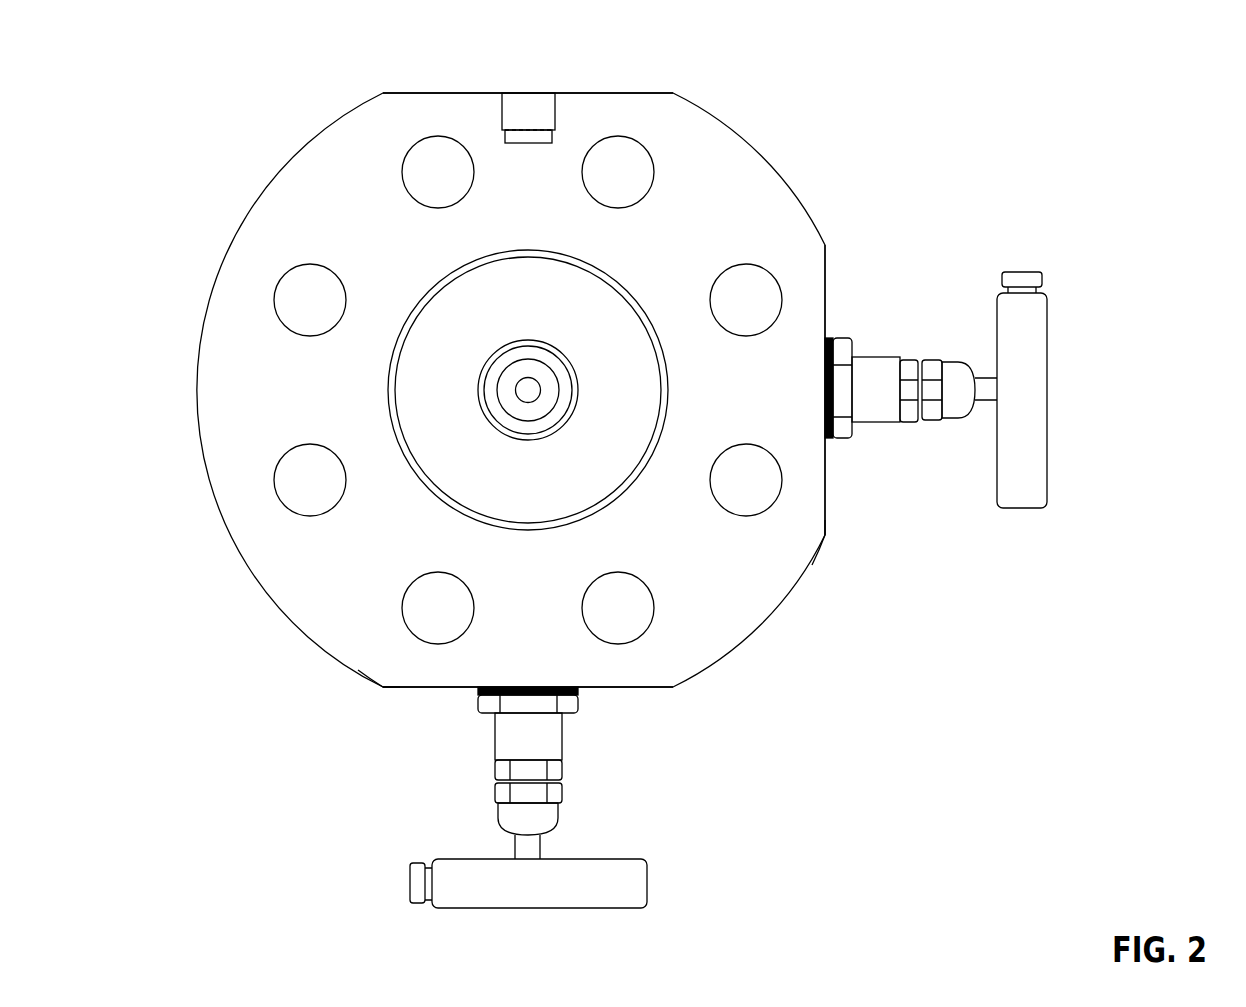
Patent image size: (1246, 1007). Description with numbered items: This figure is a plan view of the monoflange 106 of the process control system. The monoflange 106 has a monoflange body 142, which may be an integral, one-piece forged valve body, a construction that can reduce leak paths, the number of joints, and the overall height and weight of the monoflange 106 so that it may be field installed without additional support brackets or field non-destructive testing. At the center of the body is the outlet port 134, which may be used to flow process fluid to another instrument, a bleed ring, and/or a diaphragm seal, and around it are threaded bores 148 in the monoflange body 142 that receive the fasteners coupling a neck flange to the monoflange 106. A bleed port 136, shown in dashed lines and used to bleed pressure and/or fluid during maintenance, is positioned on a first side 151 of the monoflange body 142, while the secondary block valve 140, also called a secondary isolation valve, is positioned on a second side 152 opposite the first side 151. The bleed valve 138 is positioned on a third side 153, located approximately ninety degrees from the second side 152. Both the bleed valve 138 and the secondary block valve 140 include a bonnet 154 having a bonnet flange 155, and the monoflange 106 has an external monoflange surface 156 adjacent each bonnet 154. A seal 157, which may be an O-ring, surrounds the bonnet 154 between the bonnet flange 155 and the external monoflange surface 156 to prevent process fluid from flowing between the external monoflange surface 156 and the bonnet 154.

The monoflange 106 is at (866, 96).
The outlet port 134 is at (557, 397).
The bleed port 136 is at (505, 112).
The bleed valve 138 is at (1043, 490).
The secondary block valve 140 is at (627, 893).
The monoflange body 142 is at (750, 602).
The threaded bores 148 is at (755, 287).
The first side 151 is at (613, 92).
The second side 152 is at (655, 690).
The third side 153 is at (827, 300).
The bonnet 154 is at (868, 413).
The bonnet flange 155 is at (852, 347).
The external monoflange surface 156 is at (828, 493).
The seal 157 is at (837, 438).